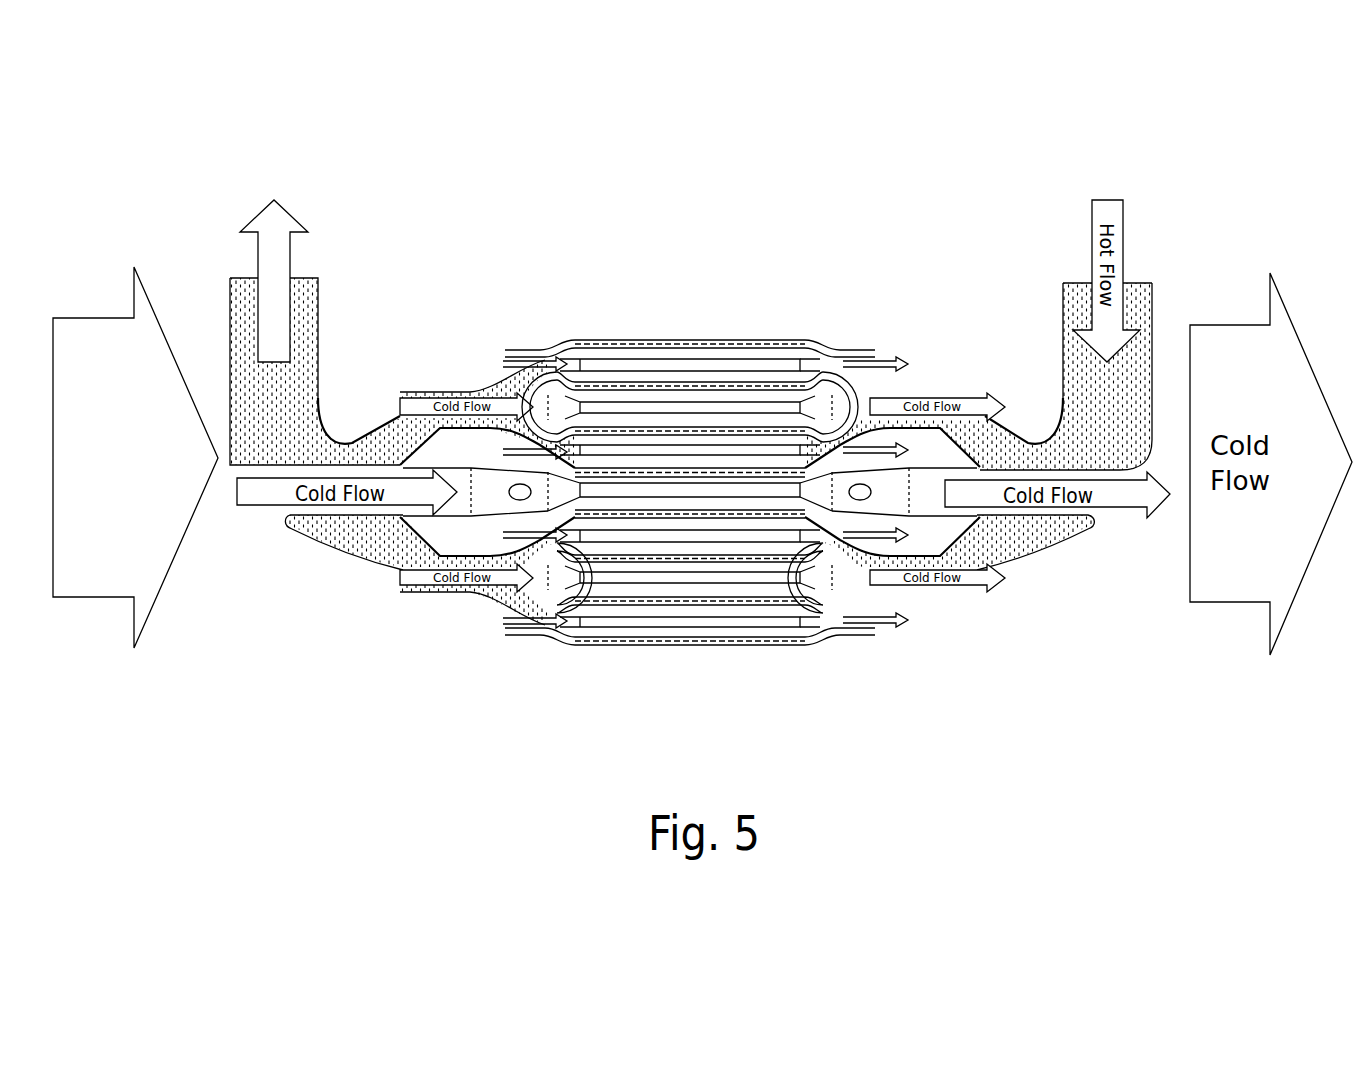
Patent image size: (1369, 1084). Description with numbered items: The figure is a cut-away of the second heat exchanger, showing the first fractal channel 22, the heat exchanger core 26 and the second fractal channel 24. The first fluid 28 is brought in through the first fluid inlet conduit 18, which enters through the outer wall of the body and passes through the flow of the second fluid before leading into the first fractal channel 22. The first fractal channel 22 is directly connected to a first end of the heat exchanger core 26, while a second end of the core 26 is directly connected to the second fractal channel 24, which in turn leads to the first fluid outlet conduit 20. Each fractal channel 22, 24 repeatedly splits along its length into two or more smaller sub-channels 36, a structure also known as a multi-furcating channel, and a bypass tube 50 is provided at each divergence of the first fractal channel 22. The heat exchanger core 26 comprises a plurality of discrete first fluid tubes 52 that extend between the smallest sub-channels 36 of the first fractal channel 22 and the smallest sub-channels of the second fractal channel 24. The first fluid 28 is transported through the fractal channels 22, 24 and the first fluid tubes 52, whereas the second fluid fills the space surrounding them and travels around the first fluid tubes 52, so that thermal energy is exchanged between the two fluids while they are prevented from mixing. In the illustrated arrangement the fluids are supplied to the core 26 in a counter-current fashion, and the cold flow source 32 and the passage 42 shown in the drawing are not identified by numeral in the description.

The first fluid inlet conduit 18 is at (1062, 323).
The first fluid outlet conduit 20 is at (239, 279).
The first fractal channel 22 is at (1047, 544).
The second fractal channel 24 is at (317, 543).
The heat exchanger core 26 is at (677, 318).
The first fluid 28 is at (277, 222).
The cold flow inlet 32 is at (102, 572).
The sub-channels 36 is at (468, 387).
The cold flow passage 42 is at (323, 455).
The bypass tube 50 is at (408, 587).
The first fluid tubes 52 is at (775, 648).